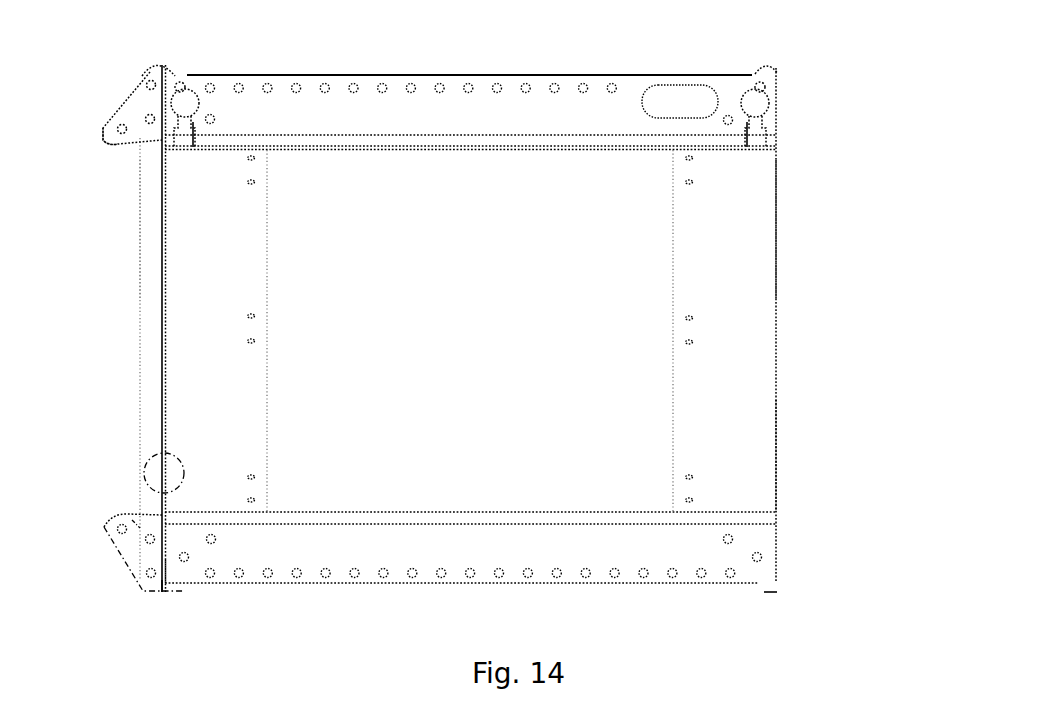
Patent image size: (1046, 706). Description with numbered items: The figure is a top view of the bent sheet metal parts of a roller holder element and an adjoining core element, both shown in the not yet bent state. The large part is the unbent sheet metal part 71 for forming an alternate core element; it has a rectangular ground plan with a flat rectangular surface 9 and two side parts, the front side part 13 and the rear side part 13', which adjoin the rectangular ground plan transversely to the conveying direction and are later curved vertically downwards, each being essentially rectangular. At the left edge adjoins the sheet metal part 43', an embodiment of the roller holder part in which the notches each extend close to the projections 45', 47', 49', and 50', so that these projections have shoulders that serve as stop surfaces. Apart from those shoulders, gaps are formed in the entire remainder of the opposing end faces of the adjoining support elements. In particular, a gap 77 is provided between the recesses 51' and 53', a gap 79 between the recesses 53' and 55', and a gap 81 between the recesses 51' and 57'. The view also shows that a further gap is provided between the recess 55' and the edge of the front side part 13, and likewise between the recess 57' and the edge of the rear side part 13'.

The flat rectangular surface 9 is at (775, 328).
The front side part 13 is at (440, 583).
The rear side part 13' is at (469, 73).
The sheet metal part 43' is at (204, 38).
The projection 45' is at (105, 230).
The projection 47' is at (122, 452).
The projection 49' is at (211, 599).
The projection 50' is at (183, 88).
The recess 51' is at (824, 229).
The recess 53' is at (824, 456).
The recess 55' is at (472, 580).
The recess 57' is at (462, 86).
The unbent sheet metal part 71 is at (455, 50).
The gap 77 is at (163, 303).
The gap 79 is at (164, 521).
The gap 81 is at (164, 139).